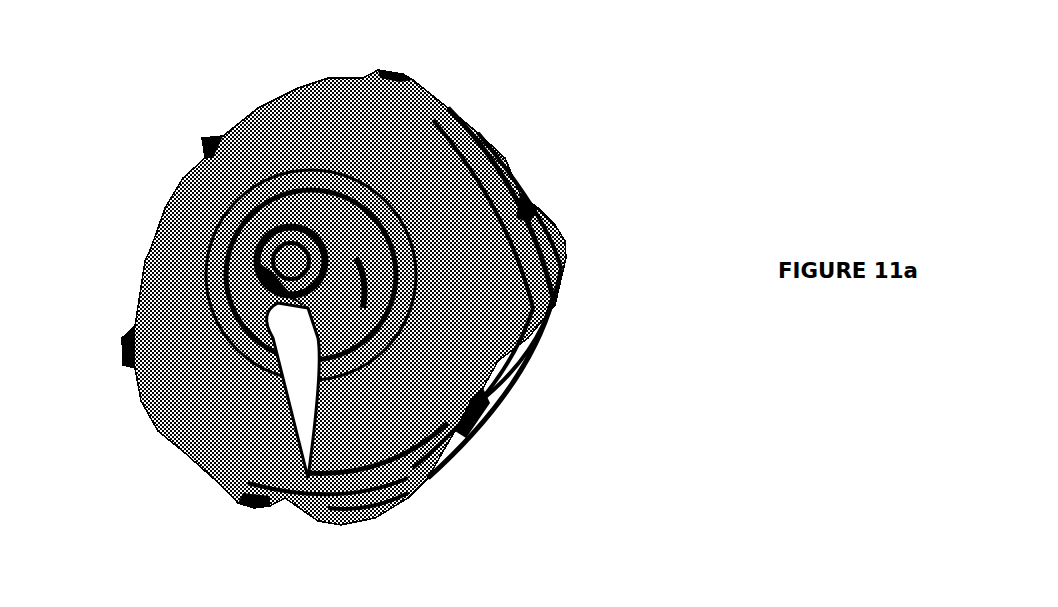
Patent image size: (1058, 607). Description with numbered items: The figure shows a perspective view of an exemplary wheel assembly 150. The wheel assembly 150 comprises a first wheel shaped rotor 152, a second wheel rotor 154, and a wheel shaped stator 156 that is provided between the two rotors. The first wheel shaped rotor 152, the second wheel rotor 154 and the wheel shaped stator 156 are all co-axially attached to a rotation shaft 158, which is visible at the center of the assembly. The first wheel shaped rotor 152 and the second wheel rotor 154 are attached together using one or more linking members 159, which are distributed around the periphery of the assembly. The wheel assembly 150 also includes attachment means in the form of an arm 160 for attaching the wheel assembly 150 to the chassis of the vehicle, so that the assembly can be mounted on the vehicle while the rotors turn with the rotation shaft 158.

The wheel assembly 150 is at (564, 137).
The first wheel shaped rotor 152 is at (537, 308).
The second wheel rotor 154 is at (492, 357).
The wheel shaped stator 156 is at (462, 398).
The rotation shaft 158 is at (250, 212).
The linking members 159 is at (402, 69).
The arm 160 is at (413, 462).